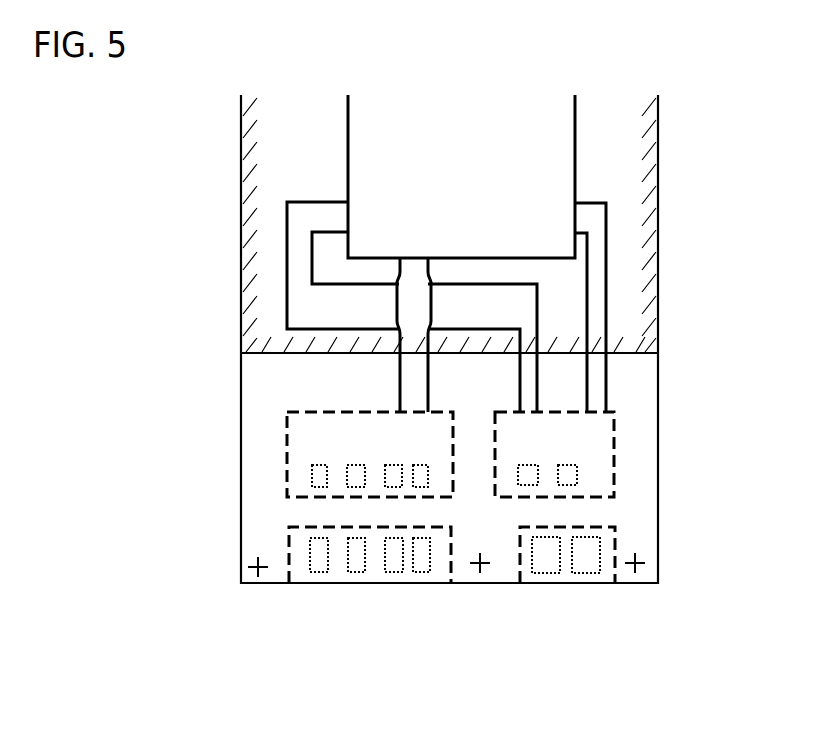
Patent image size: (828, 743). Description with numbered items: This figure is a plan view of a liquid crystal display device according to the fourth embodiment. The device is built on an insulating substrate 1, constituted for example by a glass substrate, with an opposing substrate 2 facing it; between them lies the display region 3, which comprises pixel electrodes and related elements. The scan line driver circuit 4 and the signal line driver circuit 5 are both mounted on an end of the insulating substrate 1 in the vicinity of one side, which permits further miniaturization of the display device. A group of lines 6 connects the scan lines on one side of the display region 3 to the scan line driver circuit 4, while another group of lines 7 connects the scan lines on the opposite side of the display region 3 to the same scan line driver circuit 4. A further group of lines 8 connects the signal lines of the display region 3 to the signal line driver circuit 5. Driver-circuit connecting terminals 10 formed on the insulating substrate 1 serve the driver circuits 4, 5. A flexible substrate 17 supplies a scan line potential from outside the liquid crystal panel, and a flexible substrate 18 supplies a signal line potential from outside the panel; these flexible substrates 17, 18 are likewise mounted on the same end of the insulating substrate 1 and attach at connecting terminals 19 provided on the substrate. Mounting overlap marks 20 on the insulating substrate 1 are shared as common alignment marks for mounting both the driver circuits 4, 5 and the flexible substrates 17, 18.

The insulating substrate 1 is at (658, 295).
The opposing substrate 2 is at (630, 187).
The display region 3 is at (575, 135).
The scan line driver circuit 4 is at (593, 439).
The signal line driver circuit 5 is at (302, 429).
The group of lines 6 is at (300, 256).
The group of lines 7 is at (593, 272).
The group of lines 8 is at (415, 385).
The driver-circuit connecting terminals 10 is at (320, 477).
The flexible substrate 17 is at (615, 540).
The flexible substrate 18 is at (292, 548).
The connecting terminals 19 is at (395, 560).
The mounting overlap marks 20 is at (263, 575).